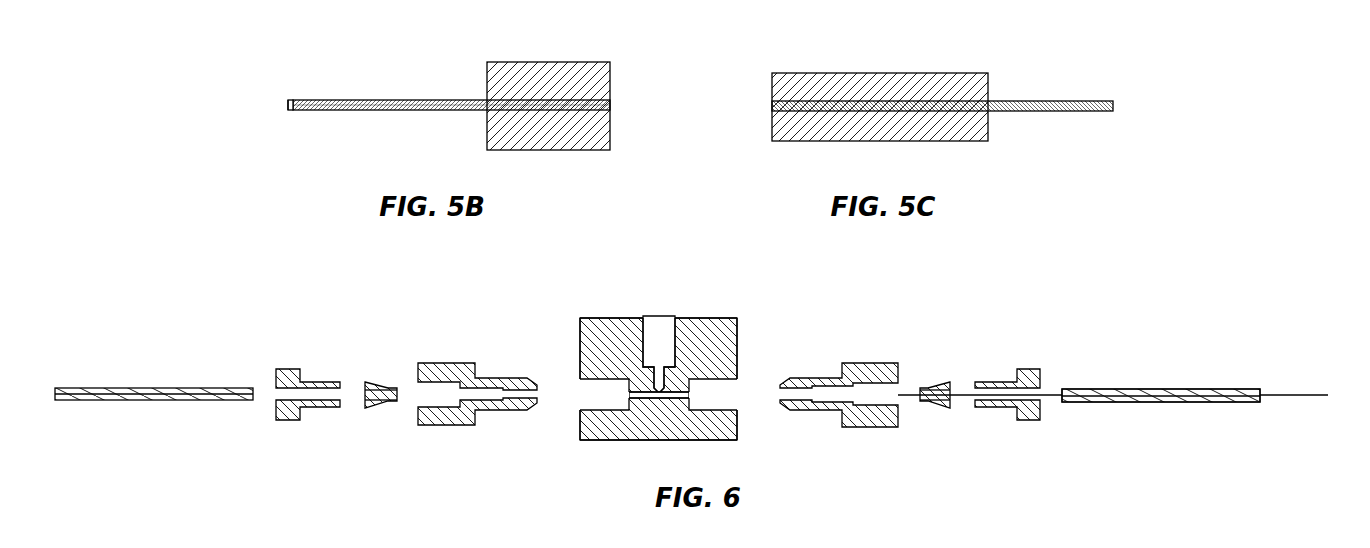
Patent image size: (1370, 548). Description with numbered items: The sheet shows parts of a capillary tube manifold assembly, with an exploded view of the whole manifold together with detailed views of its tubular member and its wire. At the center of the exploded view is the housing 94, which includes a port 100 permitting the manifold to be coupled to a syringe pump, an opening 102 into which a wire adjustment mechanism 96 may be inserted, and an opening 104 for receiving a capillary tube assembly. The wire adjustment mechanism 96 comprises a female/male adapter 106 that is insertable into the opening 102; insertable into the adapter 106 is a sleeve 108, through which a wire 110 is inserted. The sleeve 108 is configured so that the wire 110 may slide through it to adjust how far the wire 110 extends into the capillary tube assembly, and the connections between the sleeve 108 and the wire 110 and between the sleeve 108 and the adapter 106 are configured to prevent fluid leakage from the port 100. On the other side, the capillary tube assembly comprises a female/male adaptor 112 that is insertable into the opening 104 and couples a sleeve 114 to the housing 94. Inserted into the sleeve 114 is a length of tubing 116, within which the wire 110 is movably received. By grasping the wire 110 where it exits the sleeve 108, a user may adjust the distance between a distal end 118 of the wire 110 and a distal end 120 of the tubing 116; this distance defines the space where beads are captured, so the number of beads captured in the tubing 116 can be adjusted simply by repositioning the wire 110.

In FIG. 6, the housing 94 is at (732, 352).
In FIG. 6, the wire adjustment mechanism 96 is at (1005, 325).
In FIG. 6, the port 100 is at (657, 325).
In FIG. 6, the opening 102 is at (732, 400).
In FIG. 6, the opening 104 is at (587, 398).
In FIG. 6, the female/male adapter 106 is at (1000, 382).
In FIG. 5C, the sleeve 108 is at (885, 71).
In FIG. 6, the sleeve 108 is at (1150, 389).
In FIG. 5B, the wire 110 is at (422, 108).
In FIG. 5C, the wire 110 is at (1082, 101).
In FIG. 6, the wire 110 is at (1265, 395).
In FIG. 6, the female/male adaptor 112 is at (442, 363).
In FIG. 5B, the sleeve 114 is at (555, 62).
In FIG. 6, the sleeve 114 is at (165, 388).
In FIG. 5B, the tubing 116 is at (350, 100).
In FIG. 5B, the distal end of wire 118 is at (287, 102).
In FIG. 5B, the distal end of tubing 120 is at (288, 108).